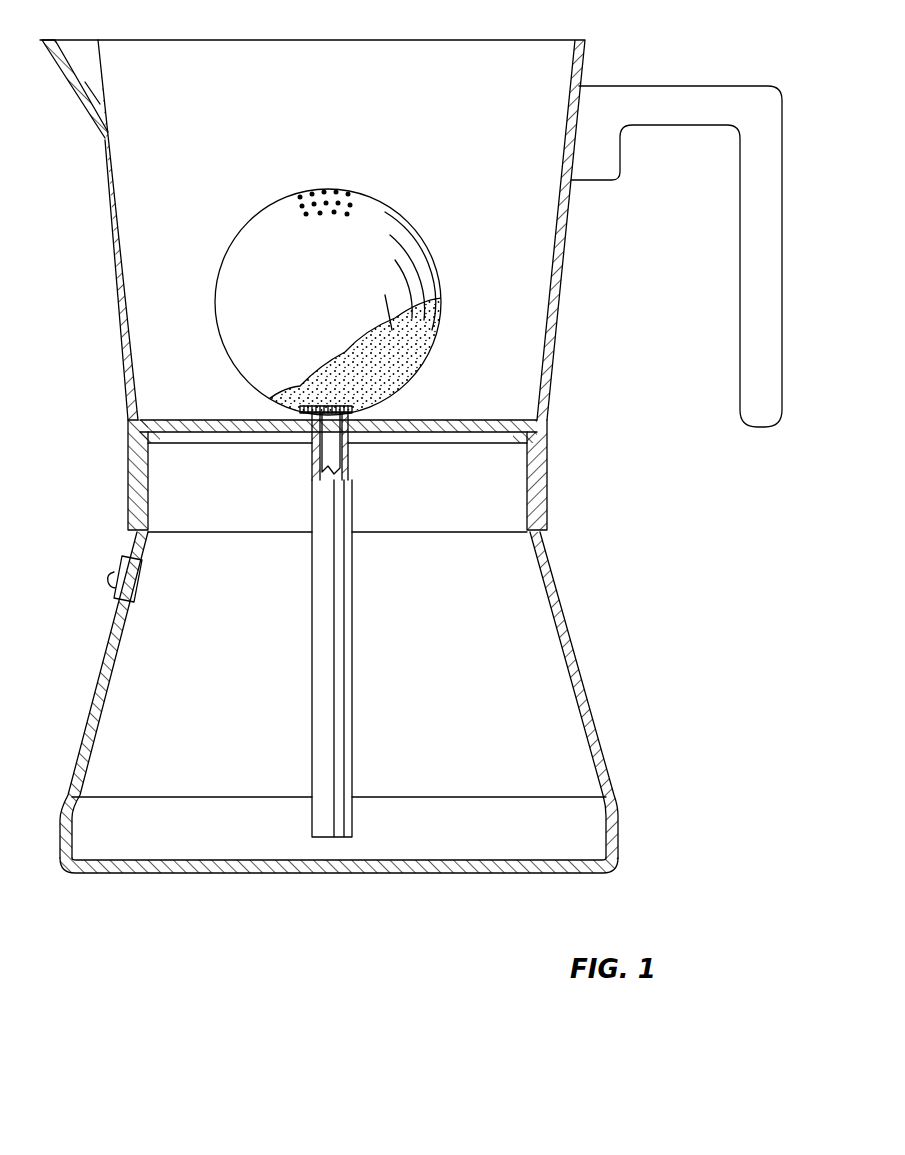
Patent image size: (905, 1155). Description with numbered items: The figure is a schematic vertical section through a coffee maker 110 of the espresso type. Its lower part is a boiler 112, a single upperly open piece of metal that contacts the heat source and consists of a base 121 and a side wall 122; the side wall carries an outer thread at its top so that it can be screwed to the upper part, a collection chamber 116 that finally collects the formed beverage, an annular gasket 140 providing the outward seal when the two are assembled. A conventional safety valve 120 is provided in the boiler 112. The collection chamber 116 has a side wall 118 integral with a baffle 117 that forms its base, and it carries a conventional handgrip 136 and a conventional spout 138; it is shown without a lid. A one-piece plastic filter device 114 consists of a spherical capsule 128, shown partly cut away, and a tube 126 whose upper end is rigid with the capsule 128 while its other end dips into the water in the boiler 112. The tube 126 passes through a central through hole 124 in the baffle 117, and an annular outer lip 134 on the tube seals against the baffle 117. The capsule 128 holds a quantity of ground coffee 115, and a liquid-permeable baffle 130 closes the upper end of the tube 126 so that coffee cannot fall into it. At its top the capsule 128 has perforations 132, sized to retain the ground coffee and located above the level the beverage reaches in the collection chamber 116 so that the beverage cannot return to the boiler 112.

The coffee maker 110 is at (74, 425).
The boiler 112 is at (349, 725).
The filter device 114 is at (444, 240).
The ground coffee 115 is at (400, 356).
The collection chamber 116 is at (100, 256).
The baffle 117 is at (245, 434).
The side wall 118 is at (553, 300).
The safety valve 120 is at (114, 590).
The base 121 is at (467, 873).
The side wall 122 is at (100, 672).
The through hole 124 is at (305, 436).
The tube 126 is at (352, 688).
The capsule 128 is at (438, 318).
The liquid-permeable baffle 130 is at (368, 404).
The perforations 132 is at (348, 200).
The annular outer lip 134 is at (365, 452).
The handgrip 136 is at (740, 240).
The spout 138 is at (64, 84).
The annular gasket 140 is at (160, 434).